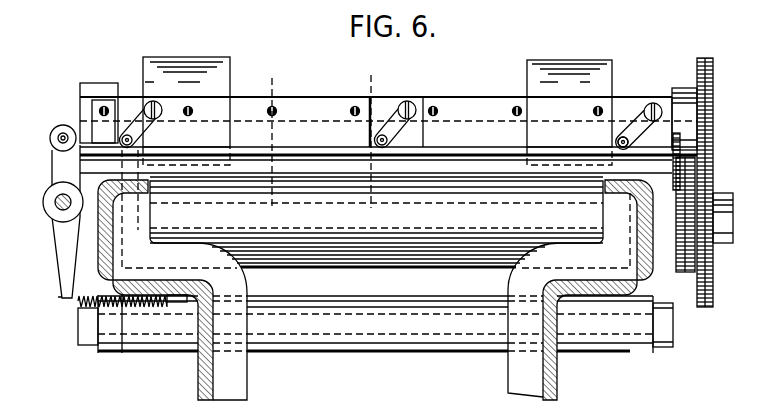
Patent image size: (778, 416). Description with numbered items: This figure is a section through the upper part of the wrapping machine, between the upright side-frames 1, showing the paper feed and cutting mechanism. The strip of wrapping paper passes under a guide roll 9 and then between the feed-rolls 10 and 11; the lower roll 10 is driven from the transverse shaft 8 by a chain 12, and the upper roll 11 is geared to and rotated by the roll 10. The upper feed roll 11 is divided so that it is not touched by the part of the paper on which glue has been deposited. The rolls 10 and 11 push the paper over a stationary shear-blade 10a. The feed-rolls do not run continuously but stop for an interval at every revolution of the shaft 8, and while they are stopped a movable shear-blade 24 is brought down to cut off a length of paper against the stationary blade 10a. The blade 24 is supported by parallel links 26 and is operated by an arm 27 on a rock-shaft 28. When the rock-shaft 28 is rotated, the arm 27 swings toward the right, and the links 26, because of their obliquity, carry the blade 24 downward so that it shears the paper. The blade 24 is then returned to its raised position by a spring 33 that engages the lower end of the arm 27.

The side-frame 1 is at (375, 275).
The transverse shaft 8 is at (271, 143).
The guide roll 9 is at (414, 308).
The feed-roll 10 is at (376, 224).
The stationary shear-blade 10a is at (307, 165).
The feed-roll 11 is at (346, 111).
The chain 12 is at (713, 158).
The movable shear-blade 24 is at (75, 125).
The parallel links 26 is at (142, 118).
The arm 27 is at (52, 167).
The rock-shaft 28 is at (44, 203).
The spring 33 is at (78, 306).